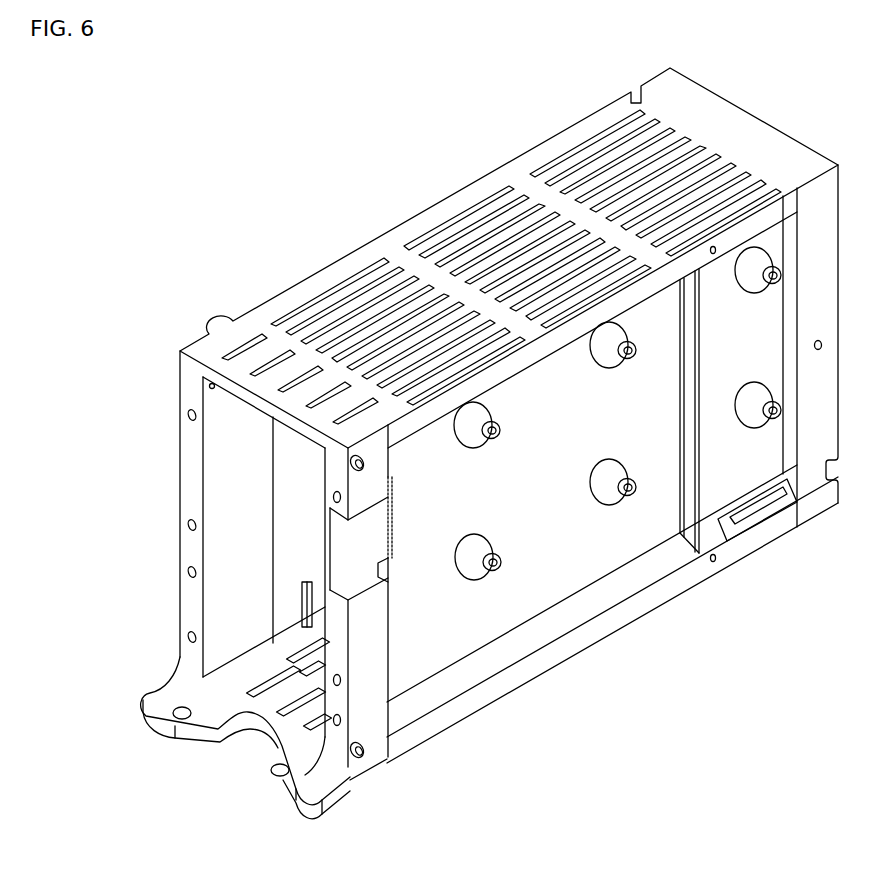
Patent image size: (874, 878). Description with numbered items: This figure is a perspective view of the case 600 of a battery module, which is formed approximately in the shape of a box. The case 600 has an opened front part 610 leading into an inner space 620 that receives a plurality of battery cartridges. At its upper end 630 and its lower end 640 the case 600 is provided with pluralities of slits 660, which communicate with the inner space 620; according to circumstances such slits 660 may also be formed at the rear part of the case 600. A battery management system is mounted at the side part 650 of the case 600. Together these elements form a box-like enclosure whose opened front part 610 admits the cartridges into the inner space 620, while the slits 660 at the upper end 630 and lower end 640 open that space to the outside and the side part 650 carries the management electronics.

The case 600 is at (108, 91).
The opened front part 610 is at (211, 568).
The inner space 620 is at (278, 477).
The upper end 630 is at (538, 185).
The lower end 640 is at (287, 748).
The side part 650 is at (605, 558).
The slits 660 is at (349, 278).